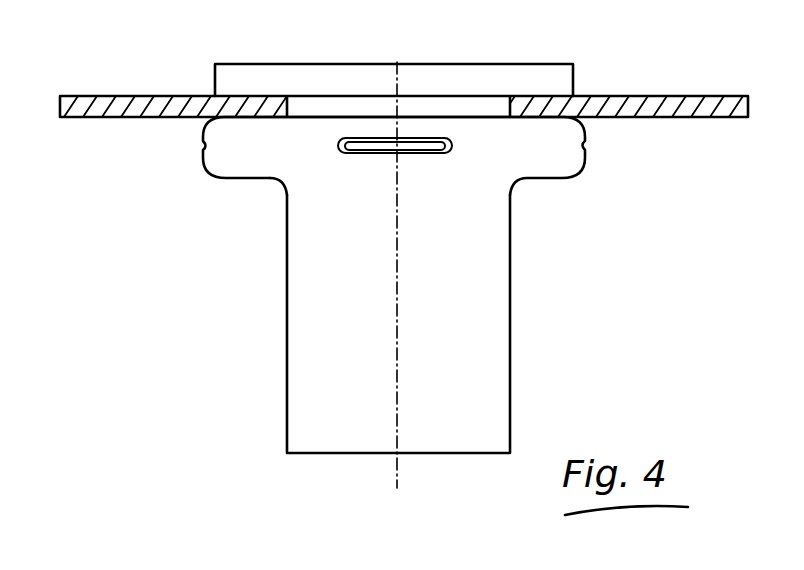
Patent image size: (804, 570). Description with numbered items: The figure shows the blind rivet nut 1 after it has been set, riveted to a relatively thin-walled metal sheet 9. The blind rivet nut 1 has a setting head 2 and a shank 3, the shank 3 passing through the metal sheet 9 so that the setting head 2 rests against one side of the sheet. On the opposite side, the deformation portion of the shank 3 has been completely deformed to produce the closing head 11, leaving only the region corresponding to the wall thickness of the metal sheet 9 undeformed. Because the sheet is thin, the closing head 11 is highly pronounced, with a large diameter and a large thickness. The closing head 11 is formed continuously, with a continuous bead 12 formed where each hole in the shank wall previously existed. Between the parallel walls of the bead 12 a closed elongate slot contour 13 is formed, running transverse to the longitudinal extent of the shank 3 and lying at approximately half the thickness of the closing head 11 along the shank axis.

The blind rivet nut 1 is at (362, 285).
The setting head 2 is at (535, 77).
The shank 3 is at (492, 337).
The metal sheet 9 is at (122, 100).
The closing head 11 is at (562, 158).
The bead 12 is at (416, 153).
The slot contour 13 is at (430, 153).